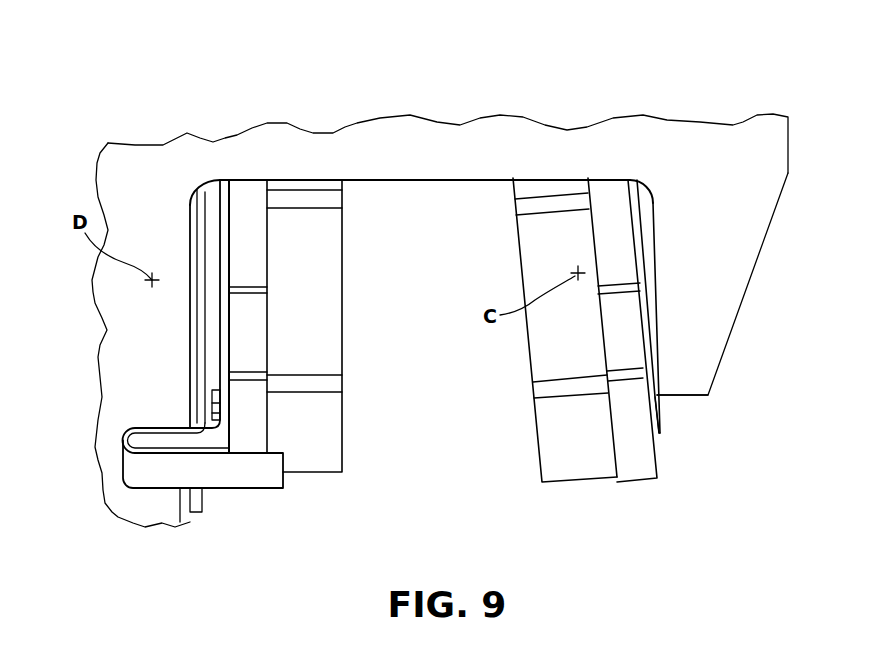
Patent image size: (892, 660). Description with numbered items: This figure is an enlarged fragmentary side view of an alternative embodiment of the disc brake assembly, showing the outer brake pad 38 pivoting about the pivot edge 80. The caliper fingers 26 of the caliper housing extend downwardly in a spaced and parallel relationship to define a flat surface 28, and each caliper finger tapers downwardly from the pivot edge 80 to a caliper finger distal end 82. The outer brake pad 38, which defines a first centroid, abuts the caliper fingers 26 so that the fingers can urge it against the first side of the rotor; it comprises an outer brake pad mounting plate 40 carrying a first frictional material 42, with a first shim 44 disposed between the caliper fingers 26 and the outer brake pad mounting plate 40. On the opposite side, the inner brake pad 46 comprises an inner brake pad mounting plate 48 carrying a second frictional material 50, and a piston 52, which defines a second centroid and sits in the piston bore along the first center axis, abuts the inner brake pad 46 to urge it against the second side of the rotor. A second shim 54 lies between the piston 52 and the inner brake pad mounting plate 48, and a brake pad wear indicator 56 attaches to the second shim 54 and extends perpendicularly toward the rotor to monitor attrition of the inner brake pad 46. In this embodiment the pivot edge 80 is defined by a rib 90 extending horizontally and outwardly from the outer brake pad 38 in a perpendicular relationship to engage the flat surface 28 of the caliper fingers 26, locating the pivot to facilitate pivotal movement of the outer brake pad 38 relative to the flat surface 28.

The caliper fingers 26 is at (768, 160).
The flat surface 28 is at (653, 227).
The outer brake pad 38 is at (617, 480).
The outer brake pad mounting plate 40 is at (640, 472).
The first frictional material 42 is at (552, 462).
The first shim 44 is at (663, 433).
The inner brake pad 46 is at (218, 178).
The inner brake pad mounting plate 48 is at (248, 198).
The second frictional material 50 is at (300, 197).
The piston 52 is at (203, 218).
The second shim 54 is at (220, 200).
The brake pad wear indicator 56 is at (245, 478).
The pivot edge 80 is at (647, 262).
The caliper finger distal end 82 is at (682, 395).
The rib 90 is at (653, 277).